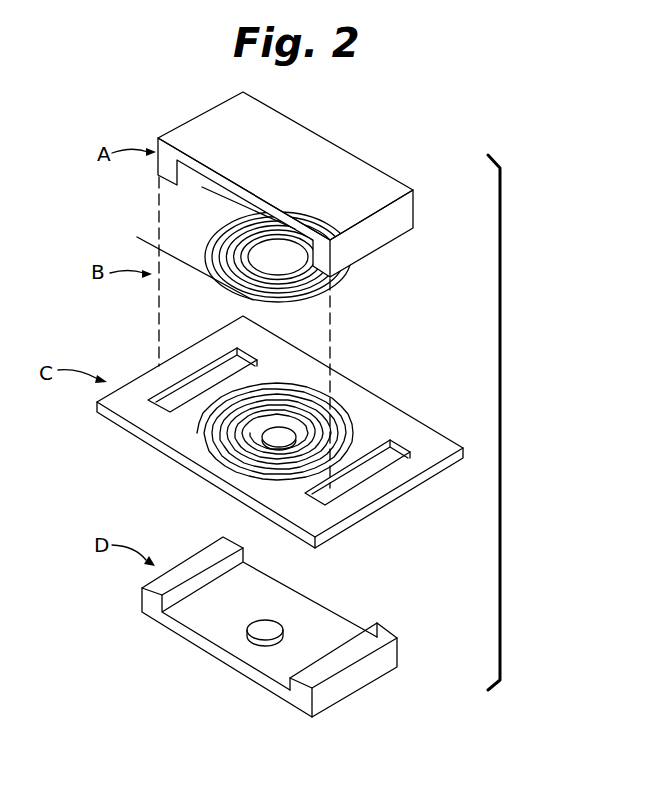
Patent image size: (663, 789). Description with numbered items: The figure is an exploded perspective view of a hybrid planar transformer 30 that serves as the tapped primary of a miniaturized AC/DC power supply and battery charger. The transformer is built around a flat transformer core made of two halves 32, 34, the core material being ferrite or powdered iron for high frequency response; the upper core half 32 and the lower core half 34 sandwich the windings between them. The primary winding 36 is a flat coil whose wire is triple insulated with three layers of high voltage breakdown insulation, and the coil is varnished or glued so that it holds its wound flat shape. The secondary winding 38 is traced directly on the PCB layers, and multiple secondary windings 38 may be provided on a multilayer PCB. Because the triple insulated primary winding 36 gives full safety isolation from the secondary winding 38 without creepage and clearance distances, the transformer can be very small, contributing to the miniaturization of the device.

The hybrid planar transformer 30 is at (236, 637).
The flat transformer core half 32 is at (292, 170).
The flat transformer core half 34 is at (275, 675).
The primary winding 36 is at (308, 300).
The secondary winding 38 is at (277, 476).